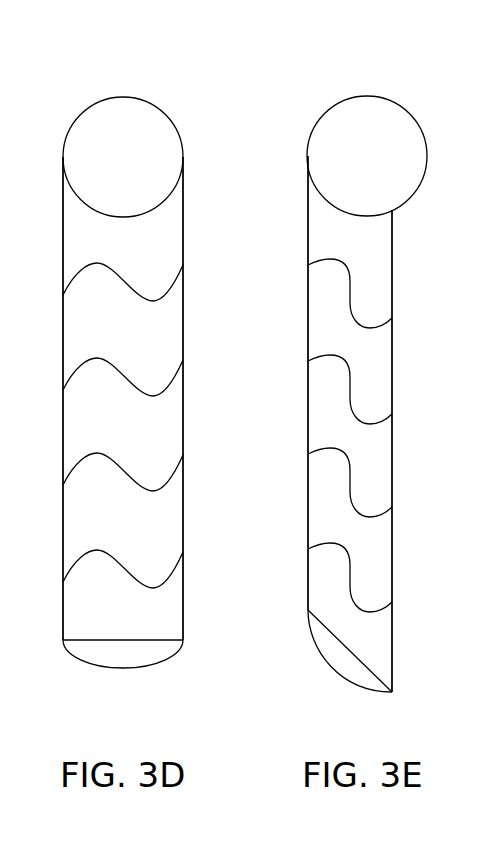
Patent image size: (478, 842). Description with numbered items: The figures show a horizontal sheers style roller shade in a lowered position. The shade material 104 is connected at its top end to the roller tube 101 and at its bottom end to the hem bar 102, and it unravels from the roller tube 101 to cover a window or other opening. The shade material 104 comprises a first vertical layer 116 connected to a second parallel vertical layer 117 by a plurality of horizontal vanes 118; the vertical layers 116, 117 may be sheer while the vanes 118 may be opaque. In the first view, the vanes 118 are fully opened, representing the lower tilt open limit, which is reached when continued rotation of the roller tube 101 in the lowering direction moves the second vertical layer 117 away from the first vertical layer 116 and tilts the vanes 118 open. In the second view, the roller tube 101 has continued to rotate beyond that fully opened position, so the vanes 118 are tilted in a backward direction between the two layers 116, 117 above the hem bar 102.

In FIG. 3D, the roller tube 101 is at (122, 96).
In FIG. 3E, the roller tube 101 is at (365, 95).
In FIG. 3D, the hem bar 102 is at (124, 653).
In FIG. 3E, the hem bar 102 is at (331, 662).
In FIG. 3D, the shade material 104 is at (183, 222).
In FIG. 3E, the shade material 104 is at (392, 258).
In FIG. 3D, the first vertical layer 116 is at (183, 327).
In FIG. 3E, the first vertical layer 116 is at (392, 371).
In FIG. 3D, the second vertical layer 117 is at (63, 313).
In FIG. 3E, the second vertical layer 117 is at (308, 408).
In FIG. 3D, the horizontal vanes 118 is at (73, 373).
In FIG. 3E, the horizontal vanes 118 is at (318, 357).